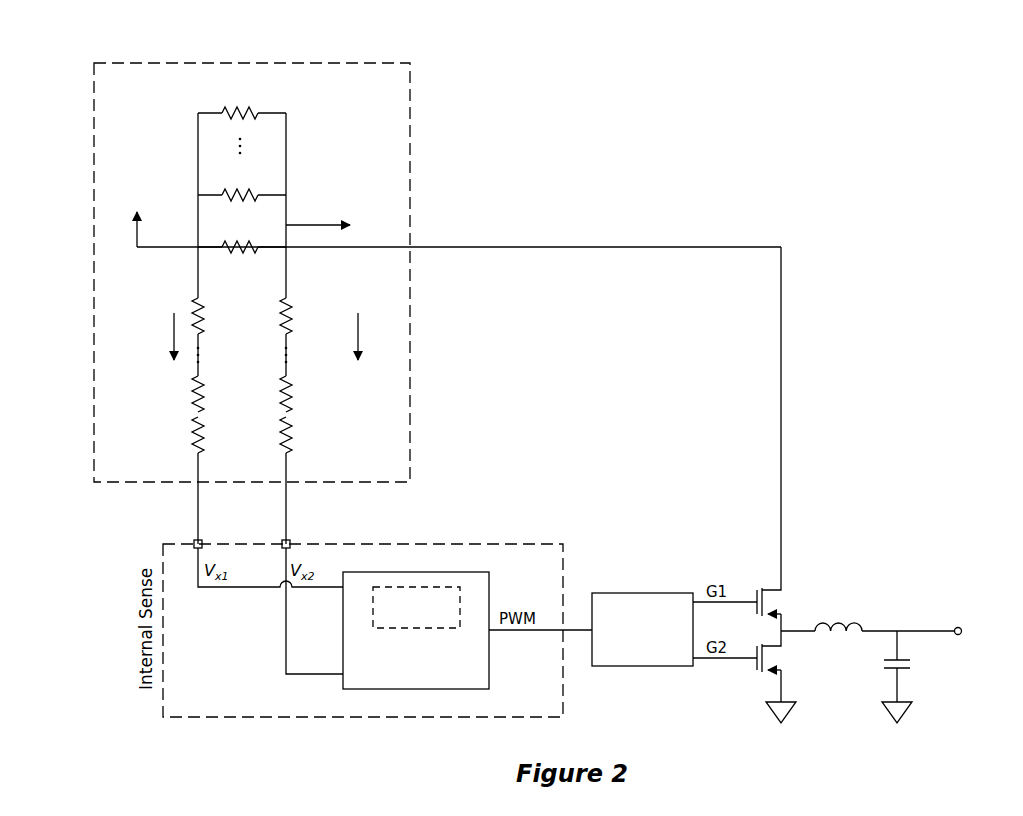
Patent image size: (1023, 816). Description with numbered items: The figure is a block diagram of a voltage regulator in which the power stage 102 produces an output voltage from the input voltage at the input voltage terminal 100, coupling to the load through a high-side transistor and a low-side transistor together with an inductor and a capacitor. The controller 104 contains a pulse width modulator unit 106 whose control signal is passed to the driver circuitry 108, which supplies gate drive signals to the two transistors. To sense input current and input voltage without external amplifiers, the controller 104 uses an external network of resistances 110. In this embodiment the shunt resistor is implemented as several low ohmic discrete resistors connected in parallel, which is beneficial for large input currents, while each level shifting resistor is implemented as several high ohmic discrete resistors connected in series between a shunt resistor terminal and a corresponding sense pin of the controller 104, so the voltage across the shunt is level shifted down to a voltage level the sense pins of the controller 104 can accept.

The input voltage terminal 100 is at (122, 229).
The power stage 102 is at (808, 556).
The controller 104 is at (416, 630).
The pulse width modulator (PWM) unit 106 is at (416, 607).
The driver circuitry 108 is at (642, 629).
The network of resistances 110 is at (410, 170).